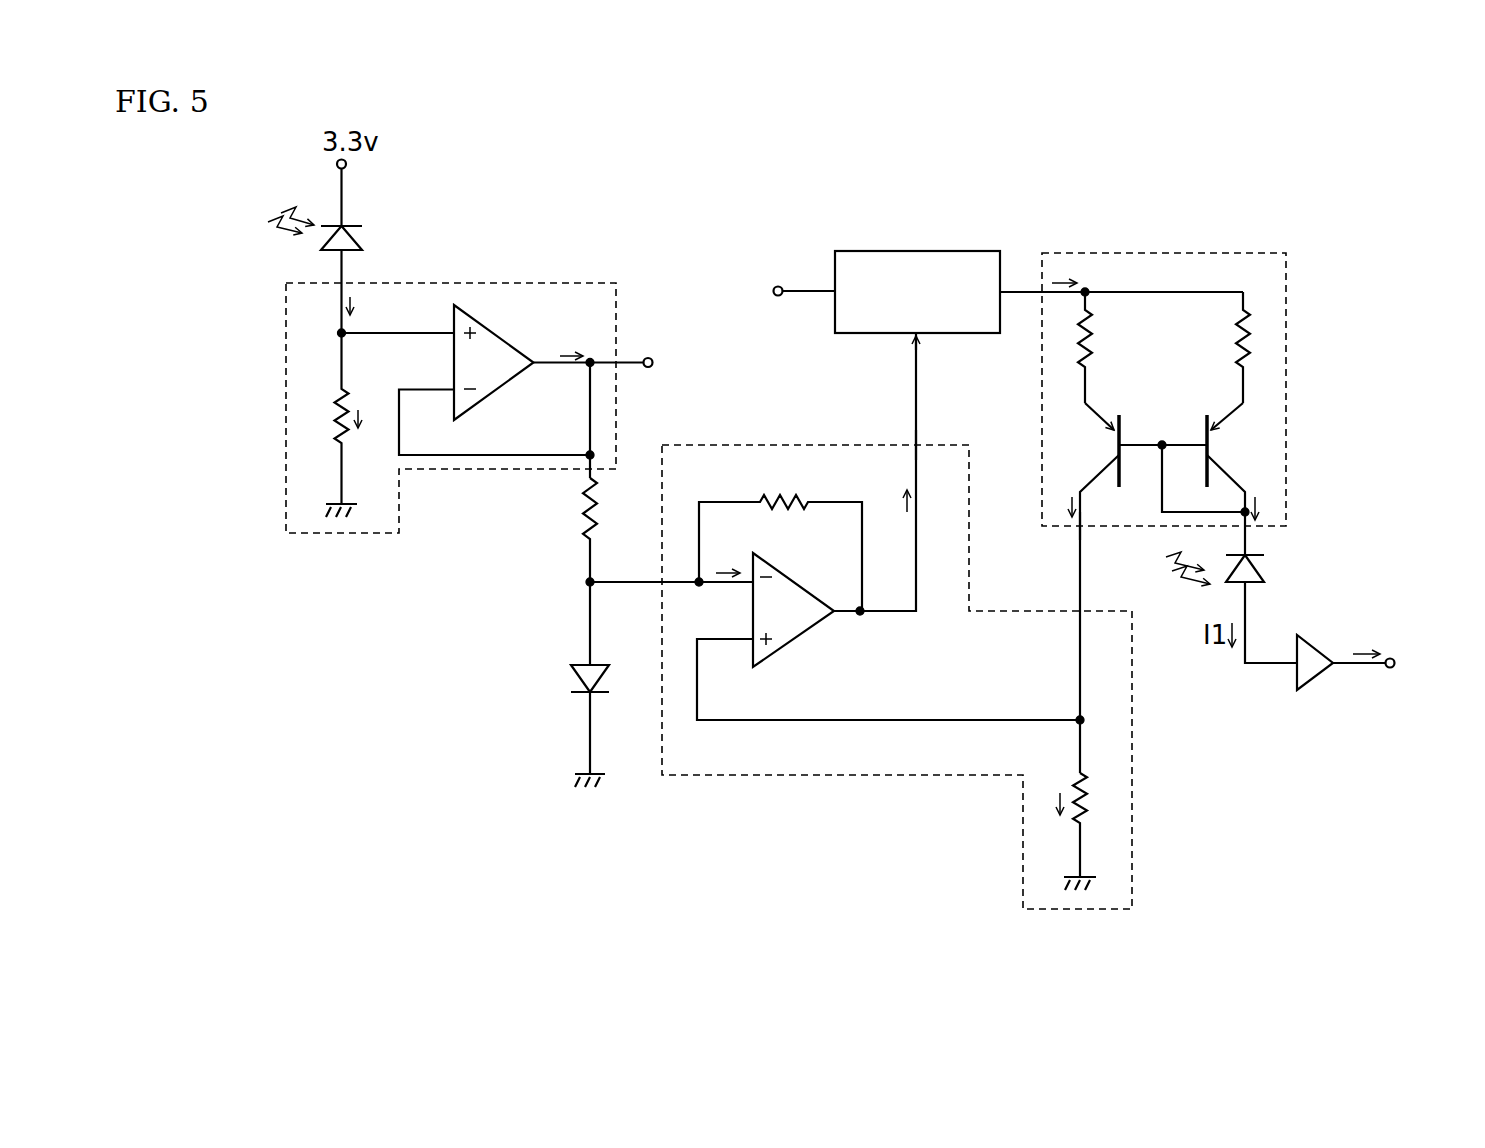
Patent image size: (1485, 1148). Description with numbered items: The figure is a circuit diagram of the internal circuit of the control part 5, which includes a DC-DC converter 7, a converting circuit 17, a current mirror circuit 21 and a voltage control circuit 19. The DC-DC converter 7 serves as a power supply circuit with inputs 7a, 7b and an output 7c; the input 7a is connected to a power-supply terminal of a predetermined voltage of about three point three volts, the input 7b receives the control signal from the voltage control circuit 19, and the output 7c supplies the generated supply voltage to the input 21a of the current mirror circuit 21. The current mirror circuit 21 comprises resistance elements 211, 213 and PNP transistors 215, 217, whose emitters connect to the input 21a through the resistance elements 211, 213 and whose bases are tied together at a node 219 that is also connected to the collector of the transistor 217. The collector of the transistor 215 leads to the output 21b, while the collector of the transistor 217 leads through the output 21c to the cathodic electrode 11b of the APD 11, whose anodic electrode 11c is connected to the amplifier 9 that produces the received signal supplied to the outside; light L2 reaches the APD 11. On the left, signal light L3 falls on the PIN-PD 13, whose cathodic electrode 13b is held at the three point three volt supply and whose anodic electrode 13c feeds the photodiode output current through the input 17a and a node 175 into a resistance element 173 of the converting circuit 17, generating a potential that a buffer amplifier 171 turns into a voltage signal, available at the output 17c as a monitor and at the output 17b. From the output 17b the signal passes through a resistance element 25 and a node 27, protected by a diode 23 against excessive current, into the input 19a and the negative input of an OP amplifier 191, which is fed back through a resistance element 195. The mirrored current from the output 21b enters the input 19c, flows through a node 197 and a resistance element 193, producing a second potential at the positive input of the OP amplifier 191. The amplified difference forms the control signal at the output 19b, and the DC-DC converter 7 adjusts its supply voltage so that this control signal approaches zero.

The control part 5 is at (656, 204).
The DC-DC converter 7 is at (926, 251).
The input 7a is at (832, 296).
The input 7b is at (920, 340).
The output 7c is at (1002, 298).
The amplifier 9 is at (1320, 680).
The APD 11 is at (1262, 568).
The cathodic electrode 11b is at (1232, 555).
The anodic electrode 11c is at (1248, 585).
The PIN-PD 13 is at (352, 238).
The cathodic electrode 13b is at (345, 224).
The anodic electrode 13c is at (330, 250).
The converting circuit 17 is at (503, 283).
The input 17a is at (345, 282).
The output 17b is at (588, 470).
The output 17c is at (616, 360).
The voltage control circuit 19 is at (739, 777).
The input 19a is at (661, 588).
The output 19b is at (918, 445).
The input 19c is at (1082, 609).
The current mirror circuit 21 is at (1288, 348).
The input 21a is at (1036, 290).
The output 21b is at (1078, 530).
The output 21c is at (1246, 532).
The diode 23 is at (576, 676).
The resistance element 25 is at (585, 518).
The node 27 is at (588, 586).
The buffer amplifier 171 is at (500, 330).
The resistance element 173 is at (334, 413).
The node 175 is at (338, 335).
The OP amplifier 191 is at (808, 636).
The resistance element 193 is at (1088, 795).
The resistance element 195 is at (806, 498).
The node 197 is at (1075, 719).
The resistance element 211 is at (1094, 333).
The resistance element 213 is at (1237, 334).
The PNP transistor 215 is at (1125, 418).
The PNP transistor 217 is at (1204, 417).
The node 219 is at (1161, 442).
The emitted light L2 is at (1168, 570).
The signal light L3 is at (268, 222).